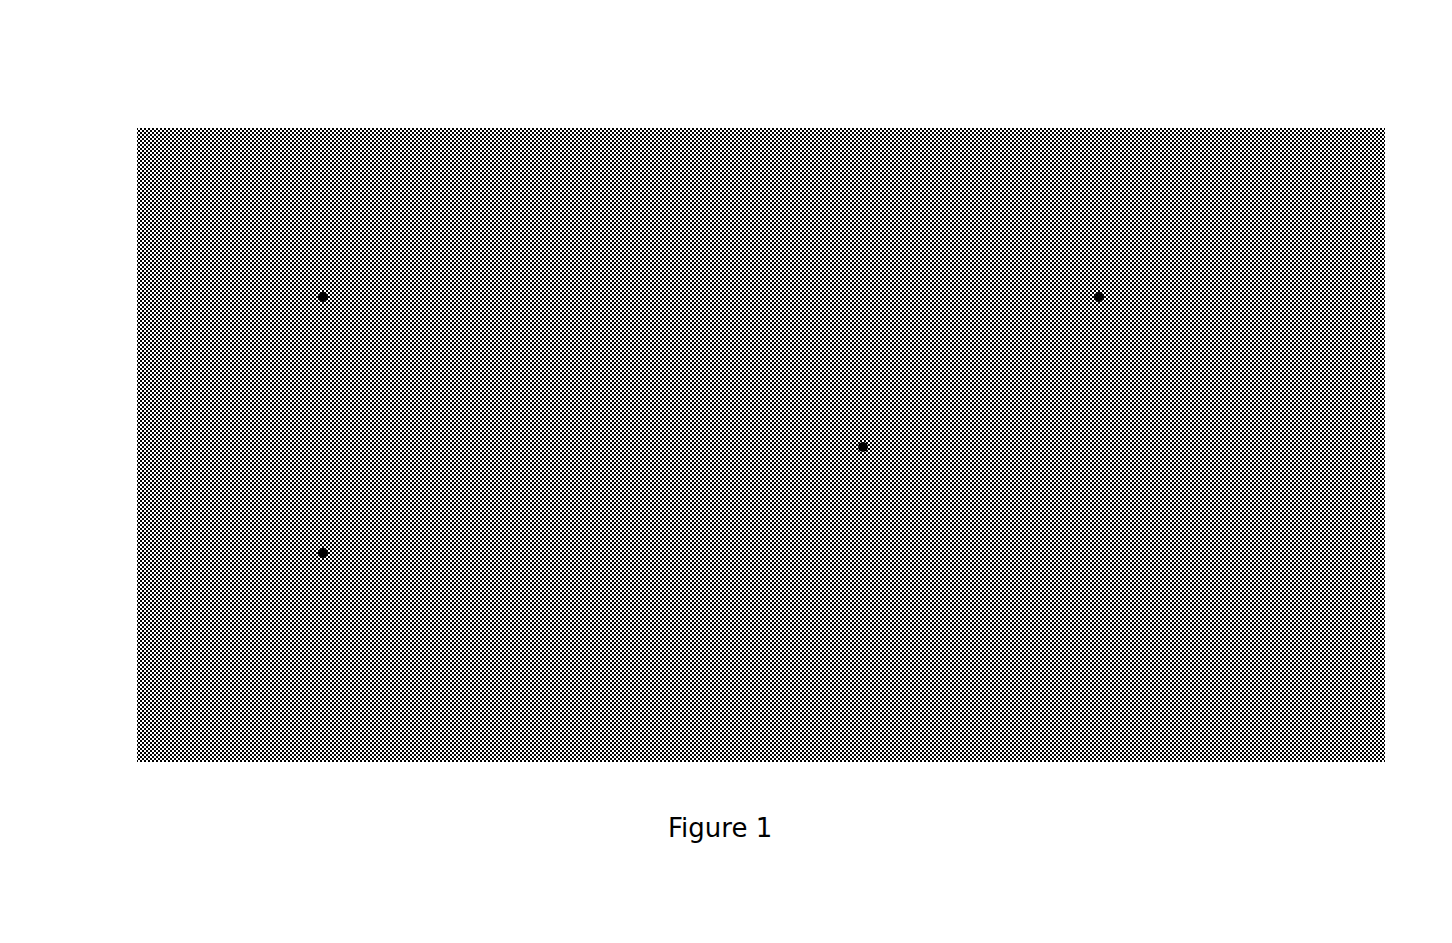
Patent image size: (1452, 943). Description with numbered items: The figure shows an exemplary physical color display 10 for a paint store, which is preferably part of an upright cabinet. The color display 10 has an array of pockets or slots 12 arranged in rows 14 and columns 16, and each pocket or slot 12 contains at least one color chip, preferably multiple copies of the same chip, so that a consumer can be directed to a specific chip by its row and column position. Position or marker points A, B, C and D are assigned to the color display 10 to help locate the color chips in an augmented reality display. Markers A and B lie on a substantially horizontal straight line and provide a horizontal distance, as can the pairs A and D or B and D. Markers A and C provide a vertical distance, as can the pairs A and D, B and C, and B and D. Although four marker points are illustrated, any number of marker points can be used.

The physical color display 10 is at (1193, 113).
The pockets or slots 12 is at (1392, 292).
The rows 14 is at (137, 96).
The columns 16 is at (103, 127).
The marker point A is at (312, 283).
The marker point B is at (1092, 279).
The marker point C is at (312, 534).
The marker point D is at (855, 468).